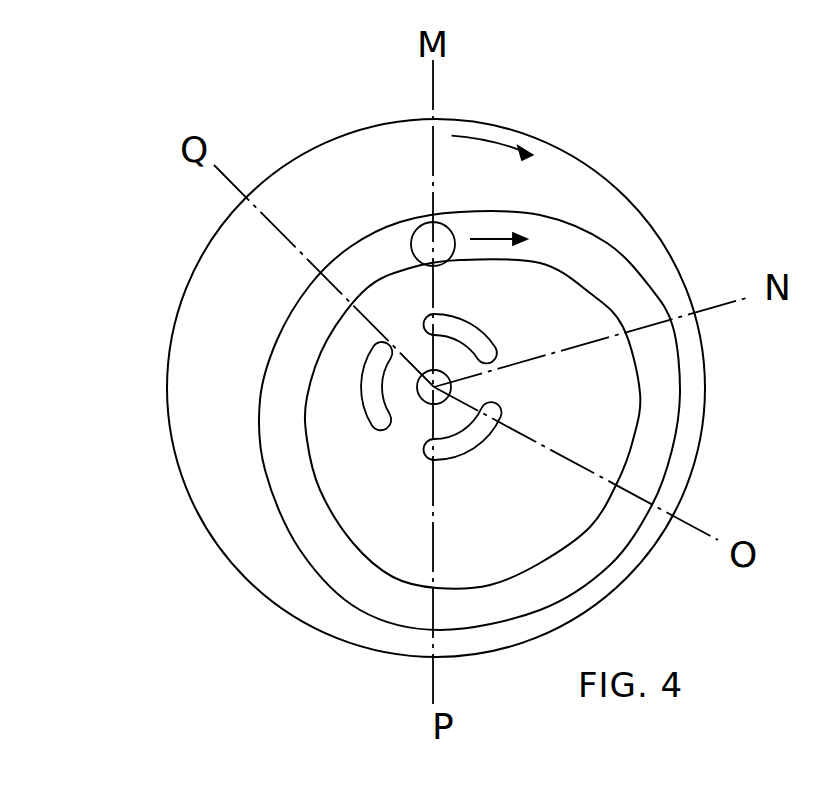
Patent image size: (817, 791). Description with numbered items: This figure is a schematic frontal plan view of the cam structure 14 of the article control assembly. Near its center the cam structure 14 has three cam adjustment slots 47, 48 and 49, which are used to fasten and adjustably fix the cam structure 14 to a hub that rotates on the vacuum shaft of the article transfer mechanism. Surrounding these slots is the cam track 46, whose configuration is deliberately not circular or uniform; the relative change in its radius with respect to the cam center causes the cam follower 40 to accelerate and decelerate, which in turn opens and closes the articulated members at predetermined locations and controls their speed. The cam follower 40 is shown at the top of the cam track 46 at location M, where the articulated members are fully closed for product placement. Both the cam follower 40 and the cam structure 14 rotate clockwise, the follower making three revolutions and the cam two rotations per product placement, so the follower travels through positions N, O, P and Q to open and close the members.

The cam structure 14 is at (698, 420).
The cam follower 40 is at (416, 232).
The cam track 46 is at (644, 292).
The cam adjustment slot 47 is at (476, 327).
The cam adjustment slot 48 is at (381, 423).
The cam adjustment slot 49 is at (478, 443).